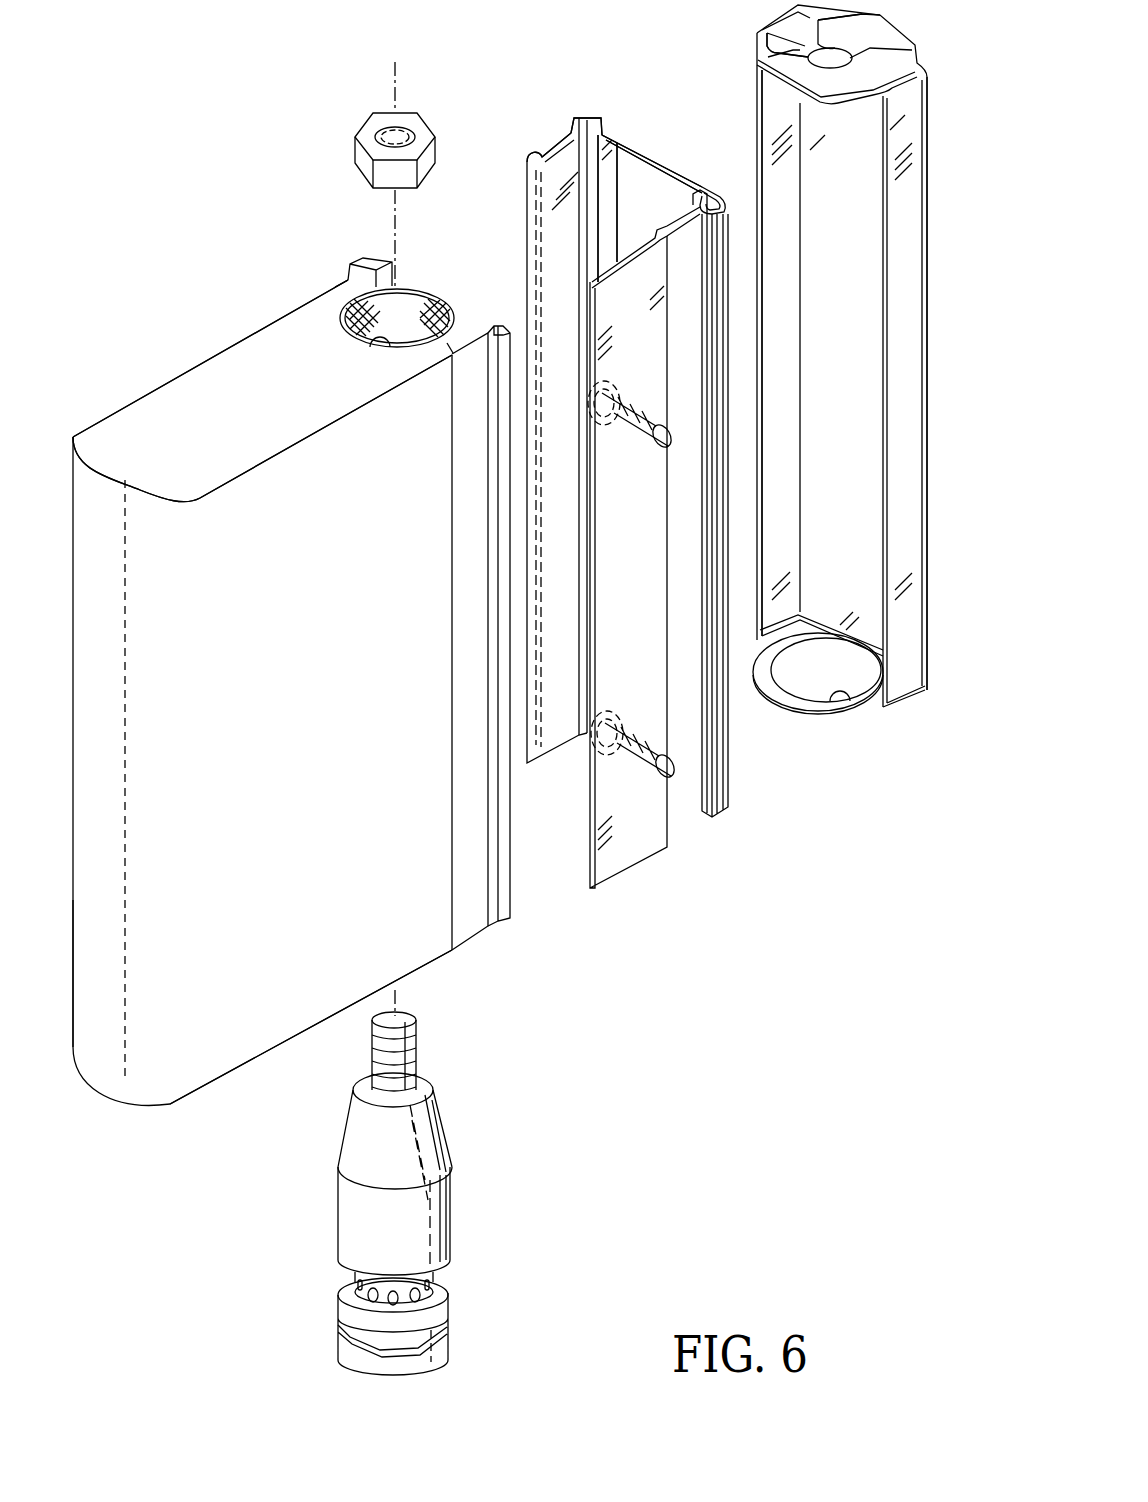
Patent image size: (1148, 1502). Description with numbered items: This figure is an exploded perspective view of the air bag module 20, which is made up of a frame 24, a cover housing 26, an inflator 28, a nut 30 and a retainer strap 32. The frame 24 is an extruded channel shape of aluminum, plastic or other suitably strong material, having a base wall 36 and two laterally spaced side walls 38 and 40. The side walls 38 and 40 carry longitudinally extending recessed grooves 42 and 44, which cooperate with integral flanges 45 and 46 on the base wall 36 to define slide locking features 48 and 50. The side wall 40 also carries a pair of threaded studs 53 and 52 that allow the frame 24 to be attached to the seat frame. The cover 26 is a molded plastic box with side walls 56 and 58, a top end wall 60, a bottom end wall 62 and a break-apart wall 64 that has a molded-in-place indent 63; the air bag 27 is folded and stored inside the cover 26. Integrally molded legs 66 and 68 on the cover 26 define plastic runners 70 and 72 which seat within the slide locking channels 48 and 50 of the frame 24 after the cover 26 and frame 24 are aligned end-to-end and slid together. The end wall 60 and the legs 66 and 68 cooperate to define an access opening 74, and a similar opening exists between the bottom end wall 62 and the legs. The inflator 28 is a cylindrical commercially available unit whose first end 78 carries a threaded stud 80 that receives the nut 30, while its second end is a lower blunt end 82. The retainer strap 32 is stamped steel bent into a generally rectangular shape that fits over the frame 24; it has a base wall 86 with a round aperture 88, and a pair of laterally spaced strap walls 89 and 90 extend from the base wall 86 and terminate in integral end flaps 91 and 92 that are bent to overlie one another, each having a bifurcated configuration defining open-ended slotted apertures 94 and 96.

The air bag module 20 is at (745, 885).
The frame 24 is at (661, 410).
The cover housing 26 is at (215, 357).
The air bag 27 is at (405, 305).
The inflator 28 is at (433, 1193).
The nut 30 is at (367, 135).
The retainer strap 32 is at (791, 390).
The base wall 36 is at (665, 172).
The side wall 38 is at (550, 158).
The side wall 40 is at (682, 228).
The recessed groove 42 is at (560, 130).
The recessed groove 44 is at (700, 262).
The flange 45 is at (608, 140).
The flange 46 is at (713, 195).
The slide locking feature 48 is at (590, 116).
The slide locking feature 50 is at (735, 197).
The threaded stud 52 is at (640, 725).
The threaded stud 53 is at (640, 450).
The side wall 56 is at (190, 360).
The side wall 58 is at (220, 518).
The top end wall 60 is at (265, 330).
The bottom end wall 62 is at (275, 1057).
The indent 63 is at (127, 508).
The break-apart wall 64 is at (95, 1030).
The leg 66 is at (352, 280).
The leg 68 is at (470, 332).
The plastic runner 70 is at (362, 262).
The plastic runner 72 is at (502, 326).
The access opening 74 is at (365, 348).
The first end 78 is at (412, 1130).
The threaded stud 80 is at (425, 1043).
The blunt end 82 is at (436, 1350).
The base wall 86 is at (765, 680).
The round aperture 88 is at (836, 695).
The strap wall 89 is at (790, 405).
The strap wall 90 is at (895, 350).
The end flap 91 is at (795, 23).
The end flap 92 is at (865, 30).
The slotted aperture 94 is at (767, 44).
The slotted aperture 96 is at (837, 68).